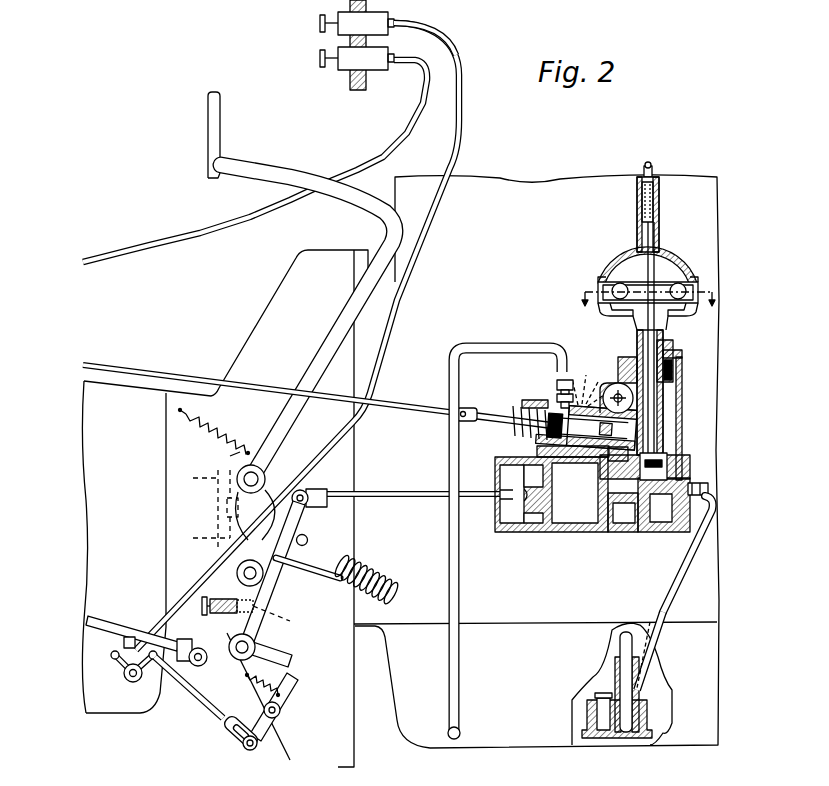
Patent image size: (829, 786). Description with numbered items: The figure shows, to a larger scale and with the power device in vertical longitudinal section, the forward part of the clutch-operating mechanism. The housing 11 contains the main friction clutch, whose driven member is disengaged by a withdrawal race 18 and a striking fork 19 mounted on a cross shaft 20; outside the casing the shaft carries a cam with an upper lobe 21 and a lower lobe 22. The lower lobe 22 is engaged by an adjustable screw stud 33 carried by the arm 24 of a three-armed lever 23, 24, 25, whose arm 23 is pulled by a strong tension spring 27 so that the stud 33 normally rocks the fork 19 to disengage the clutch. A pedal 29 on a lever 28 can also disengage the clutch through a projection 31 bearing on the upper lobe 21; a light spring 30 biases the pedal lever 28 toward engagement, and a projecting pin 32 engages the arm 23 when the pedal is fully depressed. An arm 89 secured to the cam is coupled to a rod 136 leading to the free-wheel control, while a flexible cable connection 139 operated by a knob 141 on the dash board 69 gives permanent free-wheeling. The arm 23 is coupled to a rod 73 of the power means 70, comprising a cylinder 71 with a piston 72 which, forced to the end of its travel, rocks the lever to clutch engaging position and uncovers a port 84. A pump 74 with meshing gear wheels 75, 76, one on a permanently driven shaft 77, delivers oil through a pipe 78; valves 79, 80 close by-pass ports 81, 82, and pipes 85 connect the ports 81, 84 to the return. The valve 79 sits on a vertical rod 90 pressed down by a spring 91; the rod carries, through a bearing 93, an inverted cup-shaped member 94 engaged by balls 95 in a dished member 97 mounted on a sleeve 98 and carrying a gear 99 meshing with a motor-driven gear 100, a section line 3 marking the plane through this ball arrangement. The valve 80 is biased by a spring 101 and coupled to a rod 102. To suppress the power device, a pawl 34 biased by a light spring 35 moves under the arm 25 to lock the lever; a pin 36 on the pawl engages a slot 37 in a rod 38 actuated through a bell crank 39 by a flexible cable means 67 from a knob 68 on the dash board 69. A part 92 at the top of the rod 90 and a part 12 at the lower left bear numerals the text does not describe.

The section line 3 is at (648, 297).
The housing 11 is at (345, 757).
The dash panel 12 is at (128, 713).
The withdrawal race 18 is at (230, 456).
The striking fork 19 is at (265, 474).
The cross shaft 20 is at (237, 567).
The upper cam lobe 21 is at (227, 515).
The lower cam lobe 22 is at (284, 618).
The lever arm 23 is at (277, 580).
The lever arm 24 is at (172, 640).
The lever arm 25 is at (282, 658).
The tension spring 27 is at (385, 575).
The pedal lever 28 is at (312, 338).
The pedal 29 is at (208, 125).
The light spring 30 is at (214, 420).
The projection 31 is at (300, 563).
The projecting pin 32 is at (308, 537).
The adjustable screw stud 33 is at (222, 599).
The pawl 34 is at (292, 692).
The light spring 35 is at (270, 682).
The pin 36 is at (245, 748).
The slot 37 is at (226, 738).
The rod 38 is at (195, 700).
The bell crank 39 is at (128, 637).
The flexible cable means 67 is at (462, 108).
The knob 68 is at (320, 15).
The dash board 69 is at (400, 18).
The power device 70 is at (682, 437).
The cylinder 71 is at (606, 533).
The piston 72 is at (520, 510).
The rod 73 is at (382, 490).
The pump 74 is at (645, 690).
The gear wheel 75 is at (652, 716).
The gear wheel 76 is at (583, 713).
The shaft 77 is at (620, 638).
The pipe 78 is at (670, 594).
The valve 79 is at (667, 462).
The valve 80 is at (548, 412).
The by-pass port 81 is at (660, 533).
The by-pass port 82 is at (558, 404).
The port 84 is at (537, 450).
The pipes 85 is at (528, 348).
The arm 89 is at (200, 668).
The vertical rod 90 is at (655, 412).
The spring 91 is at (659, 212).
The screw 92 is at (644, 165).
The bearing 93 is at (630, 262).
The inverted cup-shaped member 94 is at (606, 280).
The balls 95 is at (680, 268).
The dished member 97 is at (680, 318).
The sleeve 98 is at (673, 350).
The gear 99 is at (672, 383).
The gear 100 is at (618, 383).
The spring 101 is at (520, 410).
The rod 102 is at (160, 360).
The rod 136 is at (125, 679).
The flexible cable connection 139 is at (192, 241).
The knob 141 is at (318, 62).